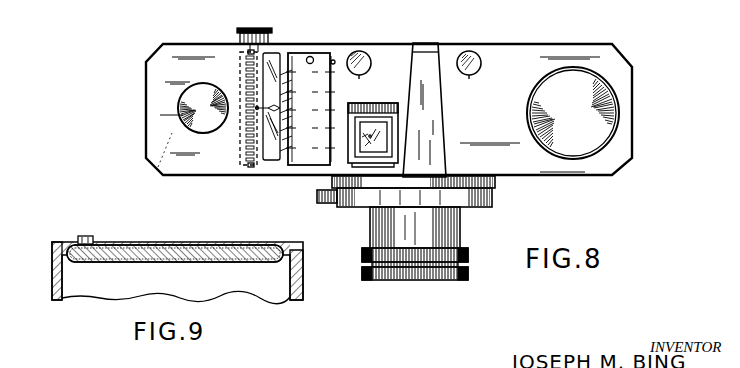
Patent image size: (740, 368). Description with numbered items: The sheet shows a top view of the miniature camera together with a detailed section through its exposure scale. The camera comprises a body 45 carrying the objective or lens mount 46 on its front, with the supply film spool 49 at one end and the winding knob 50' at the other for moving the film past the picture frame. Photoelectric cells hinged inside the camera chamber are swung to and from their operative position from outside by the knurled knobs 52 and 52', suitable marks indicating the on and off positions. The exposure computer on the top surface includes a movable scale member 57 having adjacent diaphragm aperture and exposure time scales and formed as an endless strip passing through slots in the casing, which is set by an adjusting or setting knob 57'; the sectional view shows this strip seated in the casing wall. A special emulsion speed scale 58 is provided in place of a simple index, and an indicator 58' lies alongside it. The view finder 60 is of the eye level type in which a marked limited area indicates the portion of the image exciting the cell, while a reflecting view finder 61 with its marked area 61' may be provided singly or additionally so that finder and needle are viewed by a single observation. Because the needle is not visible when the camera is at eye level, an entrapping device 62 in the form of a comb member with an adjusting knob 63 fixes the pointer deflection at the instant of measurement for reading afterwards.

In FIG. 8, the camera body 45 is at (632, 100).
In FIG. 9, the camera body 45 is at (55, 271).
In FIG. 8, the objective or lens mount 46 is at (462, 229).
In FIG. 8, the supply film spool 49 is at (186, 114).
In FIG. 8, the winding knob 50' is at (593, 113).
In FIG. 8, the knurled knob 52 is at (367, 57).
In FIG. 8, the knurled knob 52' is at (476, 60).
In FIG. 8, the movable scale member 57 is at (314, 123).
In FIG. 9, the movable scale member 57 is at (175, 241).
In FIG. 8, the adjusting or setting knob 57' is at (313, 46).
In FIG. 9, the adjusting or setting knob 57' is at (94, 228).
In FIG. 8, the emulsion speed scale 58 is at (347, 93).
In FIG. 8, the indicator strip 58' is at (279, 89).
In FIG. 8, the view finder 60 is at (436, 124).
In FIG. 8, the reflecting view finder 61 is at (373, 127).
In FIG. 8, the window indicator 61' is at (360, 116).
In FIG. 8, the entrapping device 62 is at (240, 134).
In FIG. 8, the adjusting knob 63 is at (249, 28).